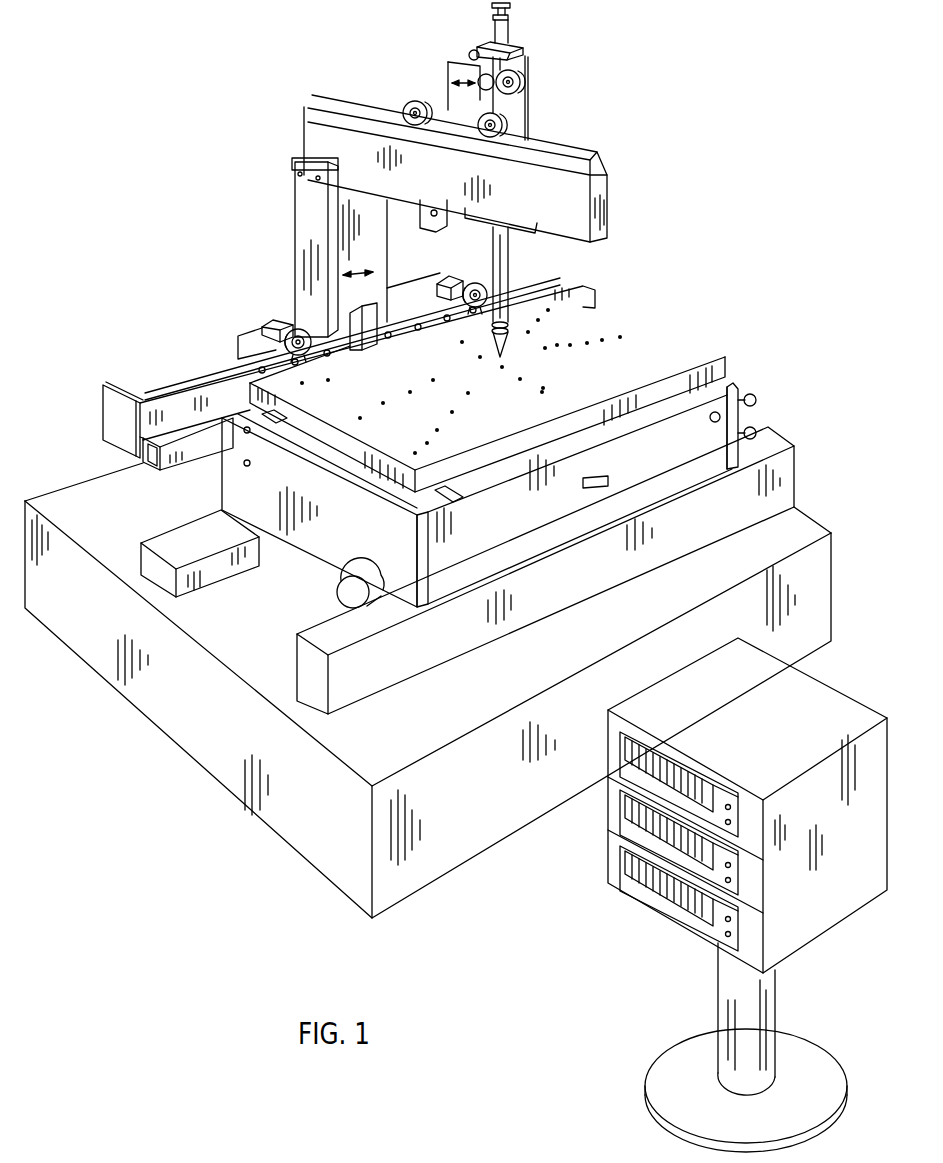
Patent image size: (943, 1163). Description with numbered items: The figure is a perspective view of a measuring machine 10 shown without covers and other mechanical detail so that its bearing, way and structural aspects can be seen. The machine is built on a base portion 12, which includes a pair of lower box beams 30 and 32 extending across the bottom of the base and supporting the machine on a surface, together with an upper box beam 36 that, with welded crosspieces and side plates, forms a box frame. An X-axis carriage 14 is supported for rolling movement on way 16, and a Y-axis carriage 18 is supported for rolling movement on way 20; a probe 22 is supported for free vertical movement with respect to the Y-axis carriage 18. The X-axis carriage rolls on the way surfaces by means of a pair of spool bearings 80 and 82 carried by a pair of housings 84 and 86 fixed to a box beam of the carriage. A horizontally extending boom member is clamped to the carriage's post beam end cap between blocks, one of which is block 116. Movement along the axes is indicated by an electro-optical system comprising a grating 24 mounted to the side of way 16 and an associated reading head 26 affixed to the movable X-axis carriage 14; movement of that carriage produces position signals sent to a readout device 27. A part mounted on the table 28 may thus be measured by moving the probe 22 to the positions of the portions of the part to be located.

The measuring machine 10 is at (640, 305).
The base portion 12 is at (292, 593).
The X-axis carriage 14 is at (284, 258).
The way 16 is at (150, 385).
The Y-axis carriage 18 is at (447, 72).
The way 20 is at (572, 140).
The probe 22 is at (510, 261).
The grating 24 is at (220, 375).
The reading head 26 is at (365, 308).
The readout device 27 is at (813, 685).
The table 28 is at (655, 342).
The lower box beam 30 is at (377, 680).
The lower box beam 32 is at (195, 585).
The upper box beam 36 is at (175, 470).
The spool bearing 80 is at (481, 283).
The spool bearing 82 is at (292, 326).
The housing 84 is at (450, 276).
The housing 86 is at (275, 322).
The block 116 is at (315, 160).